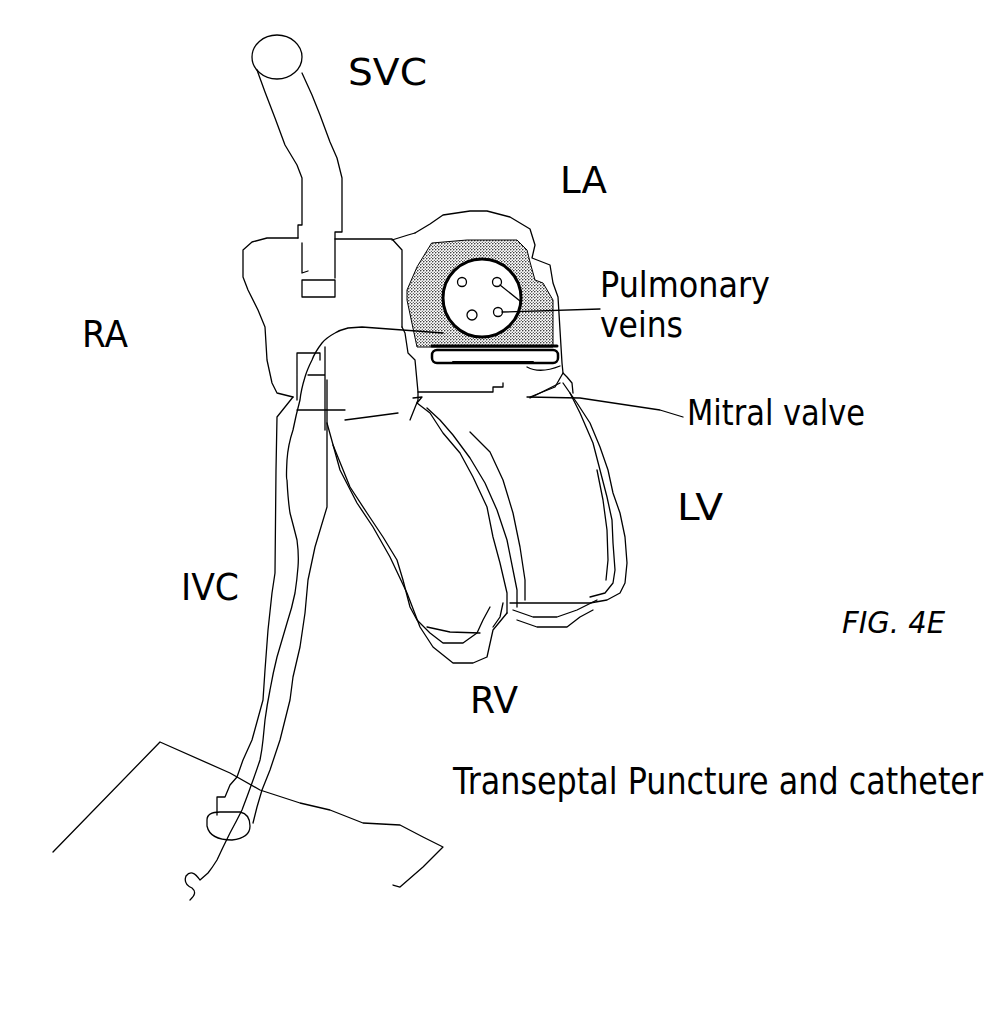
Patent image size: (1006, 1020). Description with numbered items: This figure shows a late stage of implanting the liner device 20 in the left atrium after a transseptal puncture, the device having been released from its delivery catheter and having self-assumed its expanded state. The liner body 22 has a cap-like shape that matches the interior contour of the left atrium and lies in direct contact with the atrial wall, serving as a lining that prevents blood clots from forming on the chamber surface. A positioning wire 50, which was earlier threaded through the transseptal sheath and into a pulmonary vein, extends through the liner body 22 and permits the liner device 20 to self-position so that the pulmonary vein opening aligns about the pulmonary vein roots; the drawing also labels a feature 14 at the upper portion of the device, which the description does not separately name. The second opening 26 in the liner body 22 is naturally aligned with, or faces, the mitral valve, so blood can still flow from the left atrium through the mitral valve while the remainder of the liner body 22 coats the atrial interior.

The inner sealing body / valve frame 14 is at (538, 255).
The liner device 20 is at (557, 236).
The liner body 22 is at (441, 263).
The second opening 26 is at (557, 367).
The positioning wire 50 is at (358, 327).